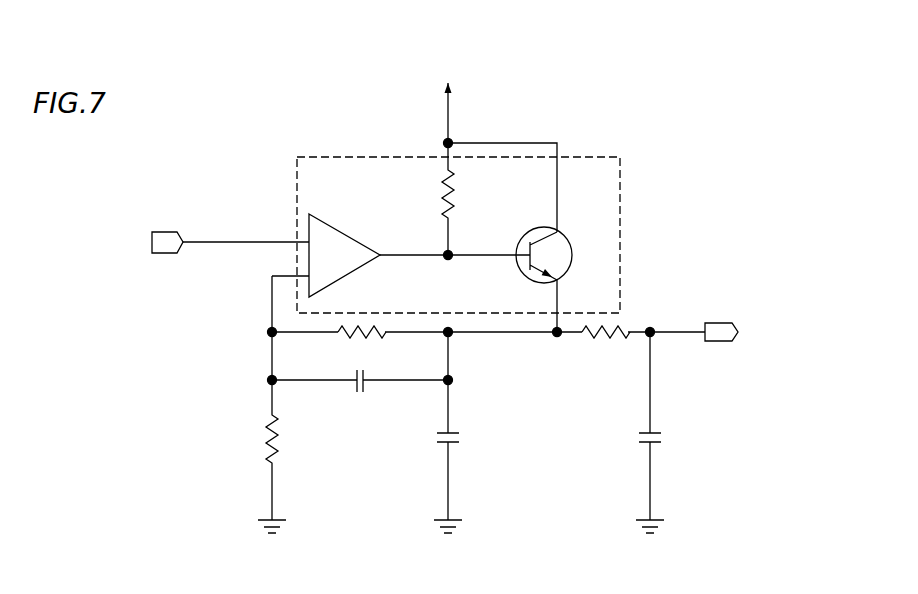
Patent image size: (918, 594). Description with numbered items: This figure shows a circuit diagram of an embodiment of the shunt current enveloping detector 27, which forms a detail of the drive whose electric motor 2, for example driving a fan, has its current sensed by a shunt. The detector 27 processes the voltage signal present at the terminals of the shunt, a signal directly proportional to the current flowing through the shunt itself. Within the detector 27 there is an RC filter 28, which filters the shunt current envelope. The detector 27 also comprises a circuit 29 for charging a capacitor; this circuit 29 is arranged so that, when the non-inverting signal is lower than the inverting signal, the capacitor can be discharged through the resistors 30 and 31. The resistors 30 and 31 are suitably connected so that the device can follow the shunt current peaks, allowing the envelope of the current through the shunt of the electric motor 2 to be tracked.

The electric motor 2 is at (635, 138).
The enveloping detector 27 is at (540, 100).
The RC filter 28 is at (623, 358).
The circuit for charging a capacitor 29 is at (622, 218).
The resistor 30 is at (338, 340).
The resistor 31 is at (257, 438).